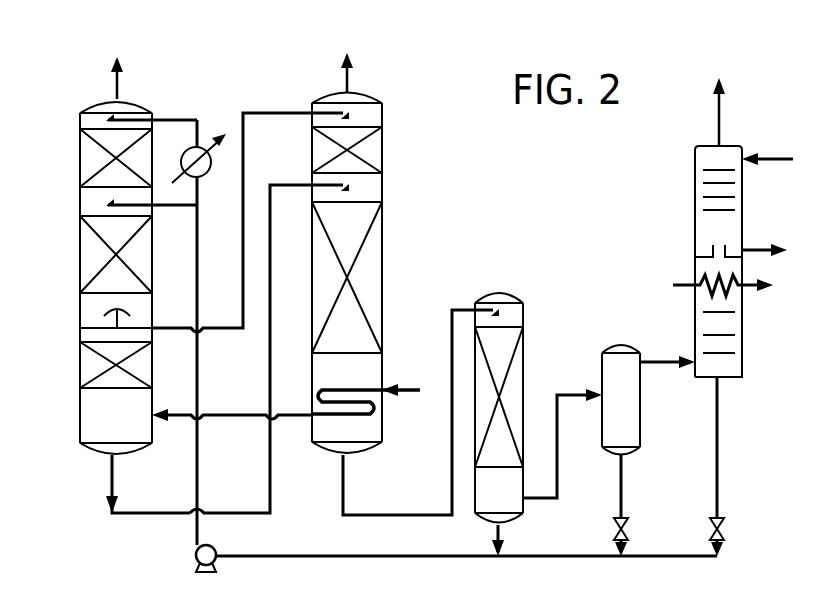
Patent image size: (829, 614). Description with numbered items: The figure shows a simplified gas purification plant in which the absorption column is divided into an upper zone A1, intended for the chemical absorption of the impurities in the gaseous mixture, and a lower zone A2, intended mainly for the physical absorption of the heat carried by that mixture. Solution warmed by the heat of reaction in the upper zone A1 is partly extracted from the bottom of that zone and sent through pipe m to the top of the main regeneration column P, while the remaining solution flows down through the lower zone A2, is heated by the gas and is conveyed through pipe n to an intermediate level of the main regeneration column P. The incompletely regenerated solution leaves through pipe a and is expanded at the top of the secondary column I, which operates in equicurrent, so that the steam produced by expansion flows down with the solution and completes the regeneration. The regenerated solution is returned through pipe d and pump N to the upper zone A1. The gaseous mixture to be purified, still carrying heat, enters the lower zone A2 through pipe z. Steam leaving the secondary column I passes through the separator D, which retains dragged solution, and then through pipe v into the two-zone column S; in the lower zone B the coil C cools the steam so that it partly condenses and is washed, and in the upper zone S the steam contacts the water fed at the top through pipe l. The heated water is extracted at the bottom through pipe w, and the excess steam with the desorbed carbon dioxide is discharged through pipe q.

The upper zone of the absorption column A1 is at (140, 255).
The lower zone of the absorption column A2 is at (122, 411).
The main regeneration column P is at (366, 253).
The secondary column I is at (529, 424).
The separator D is at (630, 450).
The column S (upper zone) S is at (706, 317).
The pump N is at (191, 388).
The coil C is at (720, 280).
The lower zone of column S B is at (730, 332).
The pipe m is at (250, 210).
The pipe n is at (269, 338).
The pipe z is at (232, 405).
The pipe a is at (421, 424).
The pipe d is at (466, 569).
The line v is at (667, 354).
The pipe q is at (733, 114).
The water feed pipe l is at (767, 145).
The pipe w is at (764, 242).